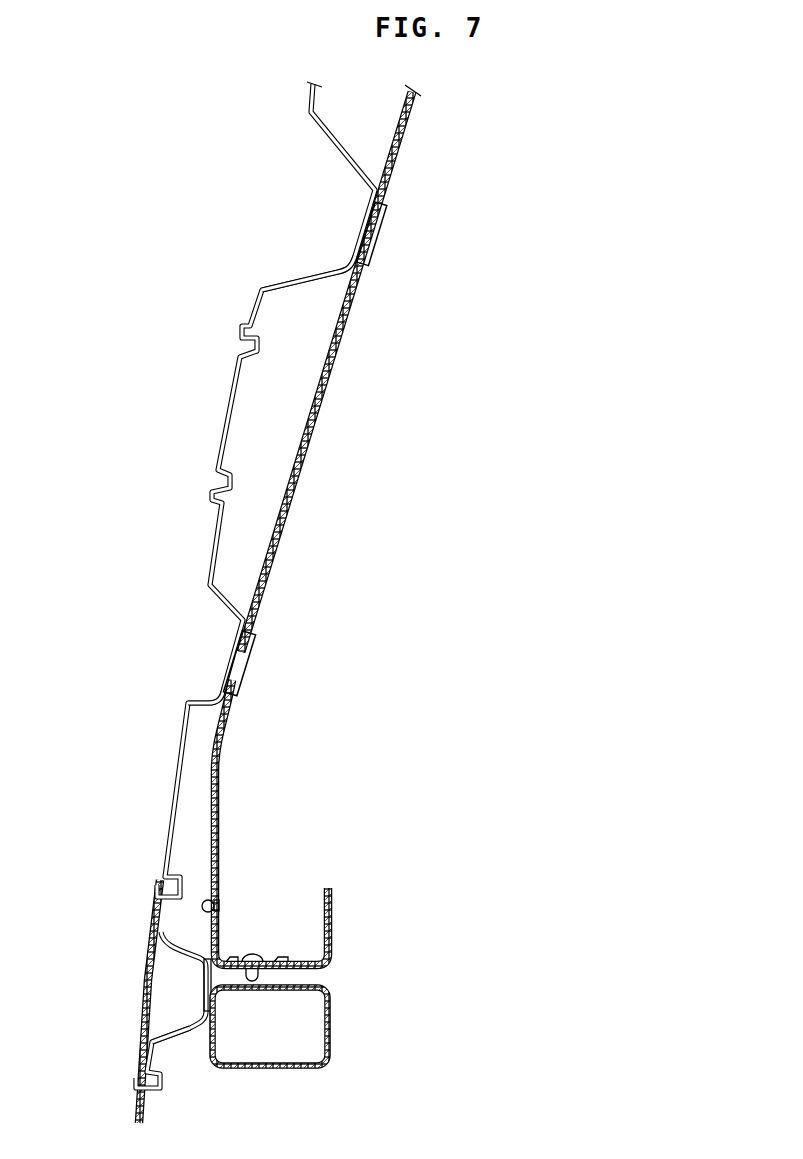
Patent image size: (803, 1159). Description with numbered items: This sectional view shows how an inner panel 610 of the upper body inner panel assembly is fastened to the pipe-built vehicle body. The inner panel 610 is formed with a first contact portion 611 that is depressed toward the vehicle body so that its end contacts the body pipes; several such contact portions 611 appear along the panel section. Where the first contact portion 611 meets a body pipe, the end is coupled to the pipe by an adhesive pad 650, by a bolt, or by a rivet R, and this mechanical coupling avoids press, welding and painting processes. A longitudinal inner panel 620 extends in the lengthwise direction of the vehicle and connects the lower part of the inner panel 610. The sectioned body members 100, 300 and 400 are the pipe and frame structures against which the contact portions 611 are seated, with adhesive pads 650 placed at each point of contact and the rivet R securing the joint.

The battery case / lower frame member 100 is at (330, 1028).
The side bracket 300 is at (330, 913).
The upper rail member 400 is at (403, 142).
The front inner panel / rear inner panel 610 is at (200, 531).
The first contact portion 611 is at (296, 282).
The longitudinal inner panel 620 is at (140, 1006).
The adhesive pad 650 is at (372, 232).
The rivet R is at (253, 957).